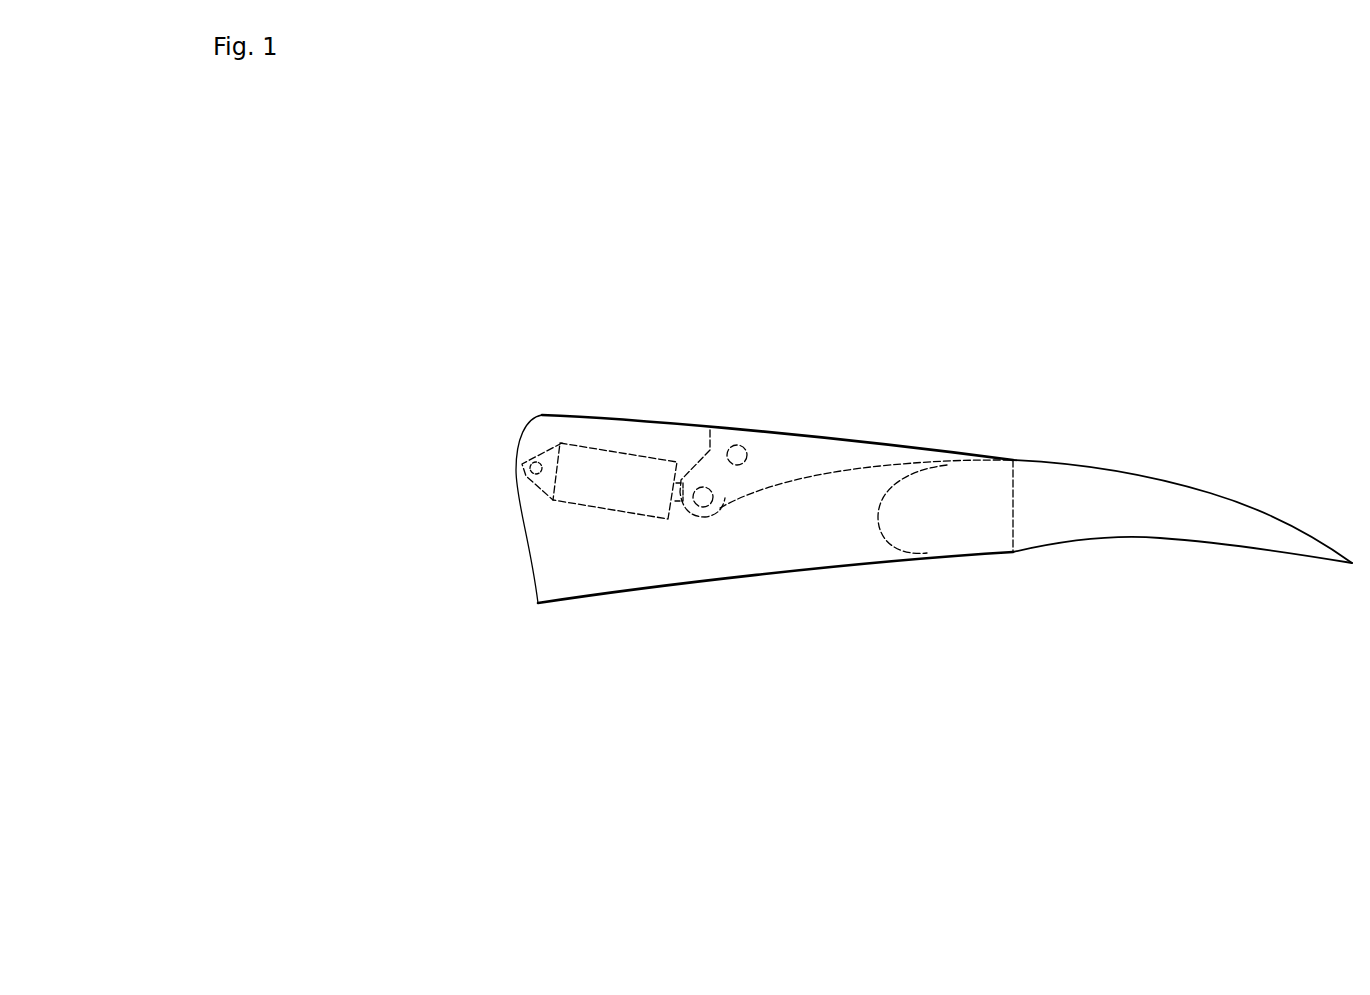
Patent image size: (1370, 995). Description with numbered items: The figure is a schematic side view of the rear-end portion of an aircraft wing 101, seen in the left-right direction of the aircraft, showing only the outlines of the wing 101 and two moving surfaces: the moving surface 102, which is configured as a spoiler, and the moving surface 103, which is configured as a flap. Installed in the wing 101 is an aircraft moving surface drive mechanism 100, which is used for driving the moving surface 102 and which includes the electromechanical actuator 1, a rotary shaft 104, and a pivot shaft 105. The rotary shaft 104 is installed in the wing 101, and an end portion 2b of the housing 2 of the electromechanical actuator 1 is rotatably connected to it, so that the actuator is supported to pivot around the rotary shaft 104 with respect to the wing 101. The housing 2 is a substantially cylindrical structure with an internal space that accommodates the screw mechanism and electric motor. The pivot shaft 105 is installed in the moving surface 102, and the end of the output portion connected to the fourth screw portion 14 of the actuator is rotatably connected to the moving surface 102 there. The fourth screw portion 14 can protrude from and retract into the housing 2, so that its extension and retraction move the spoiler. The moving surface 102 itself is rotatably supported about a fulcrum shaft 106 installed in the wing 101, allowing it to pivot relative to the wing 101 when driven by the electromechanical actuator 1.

The aircraft moving surface drive mechanism 100 is at (867, 498).
The wing 101 is at (570, 414).
The moving surface 102 is at (836, 455).
The moving surface 103 is at (1152, 488).
The rotary shaft 104 is at (517, 481).
The pivot shaft 105 is at (712, 502).
The fulcrum shaft 106 is at (747, 446).
The electromechanical actuator 1 is at (641, 498).
The housing 2 is at (628, 452).
The end portion 2b is at (486, 540).
The fourth screw portion 14 is at (677, 507).